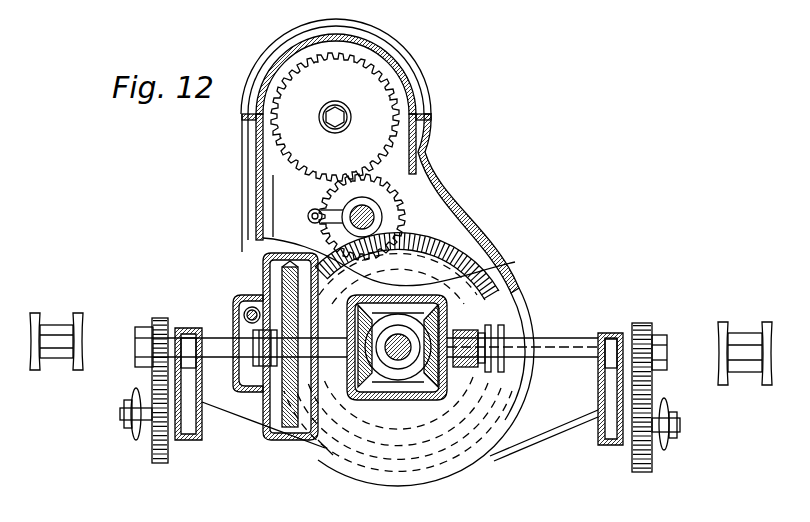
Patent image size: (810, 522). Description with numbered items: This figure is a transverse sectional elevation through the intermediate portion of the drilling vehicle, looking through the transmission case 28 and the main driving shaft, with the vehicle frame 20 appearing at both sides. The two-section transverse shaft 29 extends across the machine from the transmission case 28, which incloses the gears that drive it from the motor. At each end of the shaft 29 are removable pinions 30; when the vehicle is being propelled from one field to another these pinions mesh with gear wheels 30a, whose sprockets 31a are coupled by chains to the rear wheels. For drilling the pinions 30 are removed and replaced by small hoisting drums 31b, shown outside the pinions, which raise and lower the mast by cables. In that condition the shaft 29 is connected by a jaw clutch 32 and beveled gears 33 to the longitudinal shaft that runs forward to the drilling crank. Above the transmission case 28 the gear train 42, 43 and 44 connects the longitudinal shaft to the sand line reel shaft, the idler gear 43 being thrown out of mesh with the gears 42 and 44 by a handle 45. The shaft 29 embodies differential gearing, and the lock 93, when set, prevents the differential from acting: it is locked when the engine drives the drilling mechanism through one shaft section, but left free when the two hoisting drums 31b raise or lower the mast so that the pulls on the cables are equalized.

The gear 42 is at (388, 100).
The idler gear 43 is at (390, 196).
The handle 45 is at (320, 210).
The beveled gears 33 is at (441, 237).
The gear 44 is at (463, 250).
The transmission case 28 is at (447, 305).
The differential lock 93 is at (490, 328).
The transverse shaft 29 is at (568, 345).
The pinions 30 is at (152, 320).
The gear wheels 30a is at (150, 382).
The sprockets 31a is at (133, 440).
The hoisting drums 31b is at (53, 371).
The jaw clutch 32 is at (260, 366).
The vehicle frame 20 is at (200, 427).